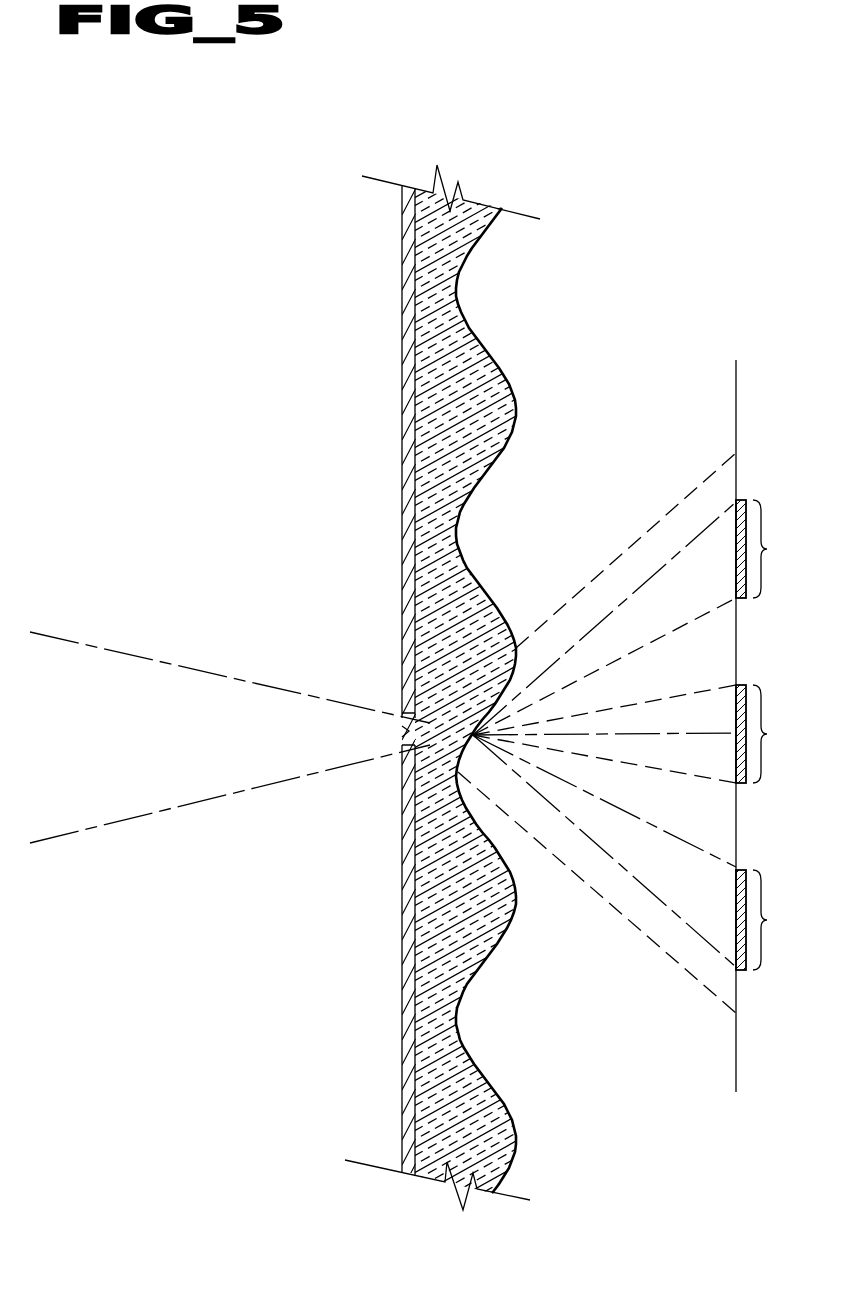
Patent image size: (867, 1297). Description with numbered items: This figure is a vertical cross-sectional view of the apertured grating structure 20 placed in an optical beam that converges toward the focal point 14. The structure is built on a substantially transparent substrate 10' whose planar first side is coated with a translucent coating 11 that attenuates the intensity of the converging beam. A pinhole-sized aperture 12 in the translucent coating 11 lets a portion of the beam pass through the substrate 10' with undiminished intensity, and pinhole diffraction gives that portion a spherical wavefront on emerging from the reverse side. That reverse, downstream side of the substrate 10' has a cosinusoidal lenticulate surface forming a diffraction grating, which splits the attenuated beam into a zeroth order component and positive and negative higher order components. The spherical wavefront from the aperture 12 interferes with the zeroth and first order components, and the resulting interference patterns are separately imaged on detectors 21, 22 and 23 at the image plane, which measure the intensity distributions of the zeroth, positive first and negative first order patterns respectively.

The substantially transparent substrate 10' is at (475, 704).
The translucent coating 11 is at (404, 1057).
The pinhole-sized aperture 12 is at (410, 735).
The focal point 14 is at (471, 738).
The apertured grating structure 20 is at (364, 358).
The detector 21 is at (741, 785).
The detector 22 is at (741, 600).
The detector 23 is at (741, 972).